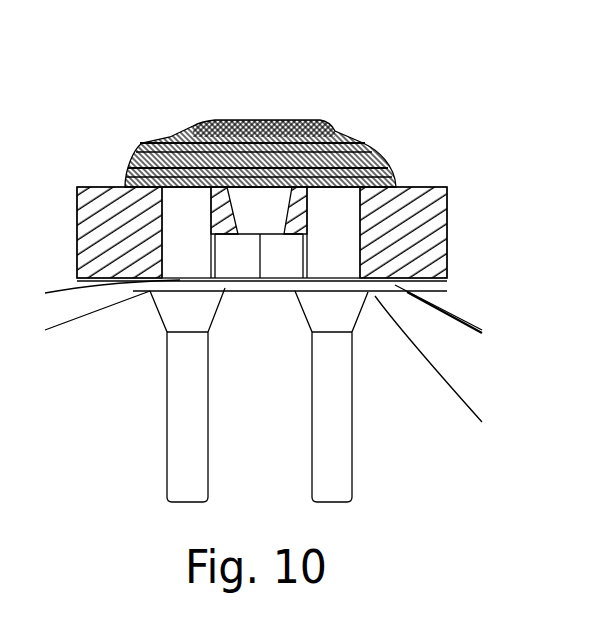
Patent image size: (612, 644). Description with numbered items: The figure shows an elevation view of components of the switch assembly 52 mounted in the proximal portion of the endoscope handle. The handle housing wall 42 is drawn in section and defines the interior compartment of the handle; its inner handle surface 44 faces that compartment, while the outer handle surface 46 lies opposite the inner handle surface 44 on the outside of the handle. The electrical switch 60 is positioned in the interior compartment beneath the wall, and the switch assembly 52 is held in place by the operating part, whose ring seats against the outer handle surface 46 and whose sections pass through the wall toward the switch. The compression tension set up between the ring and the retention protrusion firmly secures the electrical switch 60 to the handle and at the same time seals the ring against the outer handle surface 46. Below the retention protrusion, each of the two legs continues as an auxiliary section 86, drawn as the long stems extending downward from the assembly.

The handle housing wall 42 is at (465, 216).
The inner handle surface 44 is at (442, 281).
The outer handle surface 46 is at (423, 183).
The switch assembly 52 is at (248, 136).
The electrical switch 60 is at (276, 266).
The auxiliary section 86 is at (353, 447).